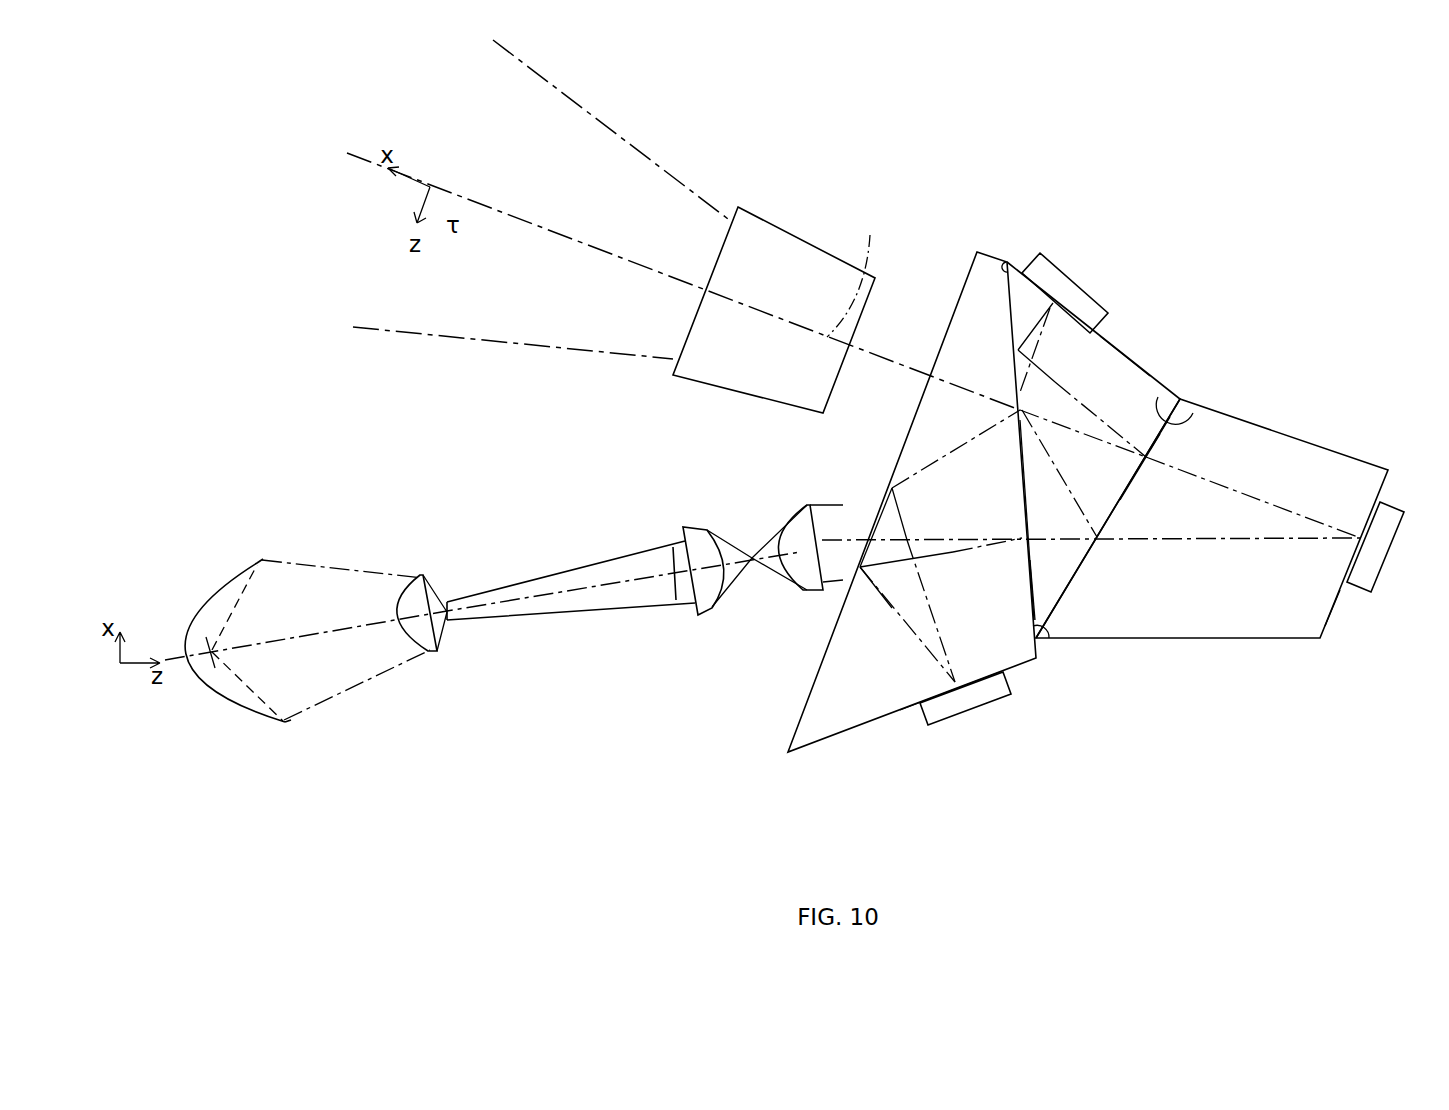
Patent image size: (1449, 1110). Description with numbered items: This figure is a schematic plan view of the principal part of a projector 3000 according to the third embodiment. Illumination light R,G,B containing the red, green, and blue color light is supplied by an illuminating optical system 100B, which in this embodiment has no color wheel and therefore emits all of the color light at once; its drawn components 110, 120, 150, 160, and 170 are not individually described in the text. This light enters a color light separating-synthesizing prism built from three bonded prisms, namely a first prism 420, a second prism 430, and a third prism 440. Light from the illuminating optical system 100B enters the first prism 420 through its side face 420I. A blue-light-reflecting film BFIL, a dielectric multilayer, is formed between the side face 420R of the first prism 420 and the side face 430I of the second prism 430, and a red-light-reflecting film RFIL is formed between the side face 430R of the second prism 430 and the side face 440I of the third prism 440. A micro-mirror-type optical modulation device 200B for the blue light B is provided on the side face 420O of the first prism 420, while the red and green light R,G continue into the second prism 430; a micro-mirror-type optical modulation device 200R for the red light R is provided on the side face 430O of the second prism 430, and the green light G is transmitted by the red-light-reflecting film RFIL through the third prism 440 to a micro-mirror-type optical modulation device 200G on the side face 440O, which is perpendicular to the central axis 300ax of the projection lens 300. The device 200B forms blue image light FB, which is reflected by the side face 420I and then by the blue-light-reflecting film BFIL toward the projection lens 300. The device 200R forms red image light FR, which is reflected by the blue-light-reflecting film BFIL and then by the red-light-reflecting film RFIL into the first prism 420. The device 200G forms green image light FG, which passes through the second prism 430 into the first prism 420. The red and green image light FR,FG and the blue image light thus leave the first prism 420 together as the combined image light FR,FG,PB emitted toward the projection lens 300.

The projector 3000 is at (240, 115).
The illuminating optical system 100B is at (265, 797).
The reflector 110 is at (274, 735).
The lens 120 is at (433, 655).
The rod integrator 150 is at (567, 612).
The lens 160 is at (697, 617).
The lens 170 is at (790, 595).
The projection lens 300 is at (822, 250).
The central axis of the projection lens 300ax is at (878, 274).
The first prism 420 is at (984, 262).
The side face of the first prism 420I is at (797, 722).
The side face of the first prism 420O is at (848, 738).
The side face of the first prism 420R is at (1040, 631).
The second prism 430 is at (1128, 397).
The side face of the second prism 430I is at (1036, 607).
The side face of the second prism 430O is at (1107, 342).
The side face of the second prism 430R is at (1195, 407).
The third prism 440 is at (1303, 452).
The side face of the third prism 440I is at (1163, 403).
The side face of the third prism 440O is at (1325, 628).
The blue-light-reflecting film BFIL is at (1007, 262).
The red-light-reflecting film RFIL is at (1040, 623).
The micro-mirror-type optical modulation device for red light 200R is at (1076, 288).
The micro-mirror-type optical modulation device for green light 200G is at (1387, 557).
The micro-mirror-type optical modulation device for blue light 200B is at (975, 712).
The blue image light FB is at (967, 443).
The red image light FR is at (1057, 389).
The green image light FG is at (1178, 468).
The blue light B is at (953, 553).
The red light R is at (1070, 490).
The green light G is at (1148, 541).
The red light and green light R,G is at (1055, 540).
The red, green and blue light R,G,B is at (855, 540).
The red image light and green image light FR,FG is at (1073, 432).
The red, green and blue image light FR,FG,PB is at (892, 363).